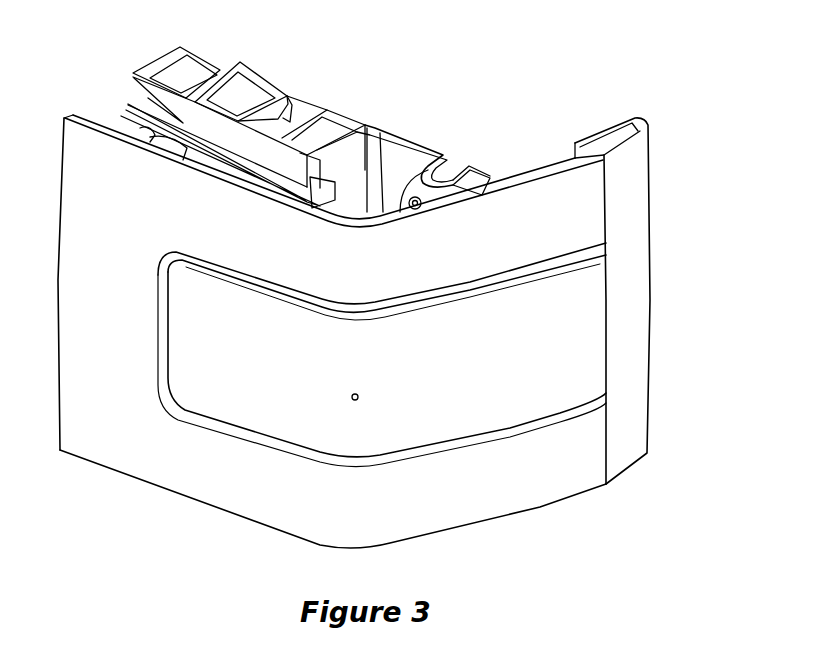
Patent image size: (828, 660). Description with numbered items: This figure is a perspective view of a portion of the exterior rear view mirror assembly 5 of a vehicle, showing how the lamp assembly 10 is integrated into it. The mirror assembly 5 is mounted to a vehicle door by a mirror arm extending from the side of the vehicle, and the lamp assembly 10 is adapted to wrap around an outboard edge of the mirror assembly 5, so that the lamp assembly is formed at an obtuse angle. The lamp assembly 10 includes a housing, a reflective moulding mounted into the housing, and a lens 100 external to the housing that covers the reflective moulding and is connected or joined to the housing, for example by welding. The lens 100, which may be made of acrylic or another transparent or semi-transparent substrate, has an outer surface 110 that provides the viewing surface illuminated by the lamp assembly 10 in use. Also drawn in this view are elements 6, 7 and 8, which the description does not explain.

The exterior rear view mirror assembly 5 is at (515, 143).
The lower front wall portion 6 is at (587, 470).
The side flange 7 is at (632, 233).
The bracket plate 8 is at (377, 127).
The lamp assembly 10 is at (248, 441).
The lens 100 is at (586, 334).
The outer surface 110 is at (504, 395).